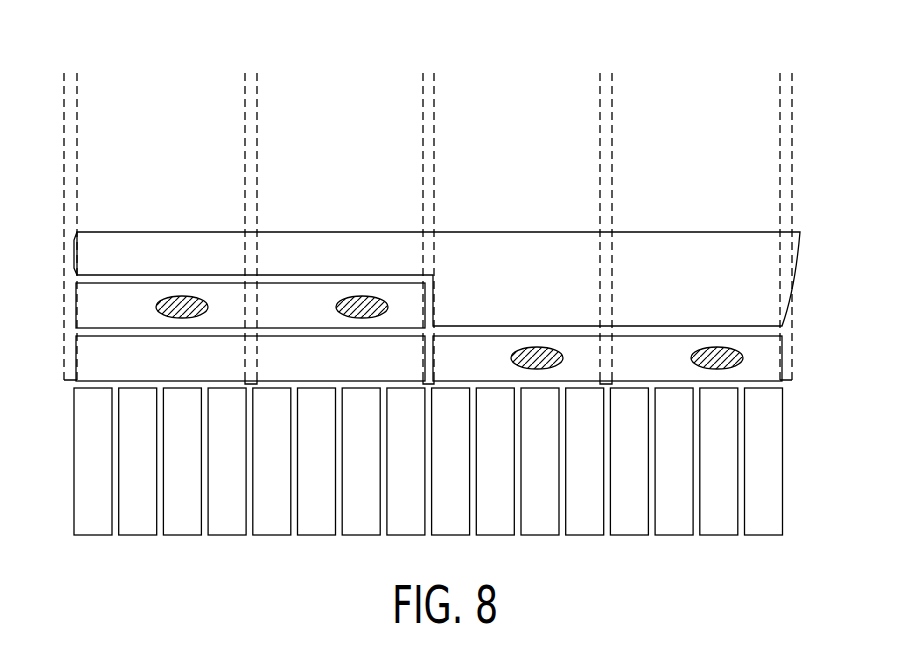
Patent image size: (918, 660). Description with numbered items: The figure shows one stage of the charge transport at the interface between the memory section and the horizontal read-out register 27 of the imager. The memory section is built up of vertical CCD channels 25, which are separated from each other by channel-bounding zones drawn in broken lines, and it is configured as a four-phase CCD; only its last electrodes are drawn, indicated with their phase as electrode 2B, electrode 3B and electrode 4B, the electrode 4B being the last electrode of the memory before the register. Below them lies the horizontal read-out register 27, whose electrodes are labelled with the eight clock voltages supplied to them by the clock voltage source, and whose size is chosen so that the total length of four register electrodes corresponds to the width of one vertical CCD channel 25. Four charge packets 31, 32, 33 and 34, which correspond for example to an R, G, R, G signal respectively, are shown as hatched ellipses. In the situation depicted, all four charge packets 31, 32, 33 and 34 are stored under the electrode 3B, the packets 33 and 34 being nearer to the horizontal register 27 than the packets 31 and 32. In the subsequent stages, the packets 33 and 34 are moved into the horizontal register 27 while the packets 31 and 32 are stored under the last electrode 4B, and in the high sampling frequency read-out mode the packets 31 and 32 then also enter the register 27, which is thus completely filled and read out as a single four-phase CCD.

The vertical CCD channel 25 is at (152, 90).
The horizontal read-out register 27 is at (800, 474).
The memory electrode of second phase 2B is at (437, 279).
The memory electrode of third phase 3B is at (429, 332).
The memory electrode of fourth phase 4B is at (250, 358).
The charge packet 31 is at (182, 296).
The charge packet 32 is at (362, 296).
The charge packet 33 is at (537, 347).
The charge packet 34 is at (717, 347).